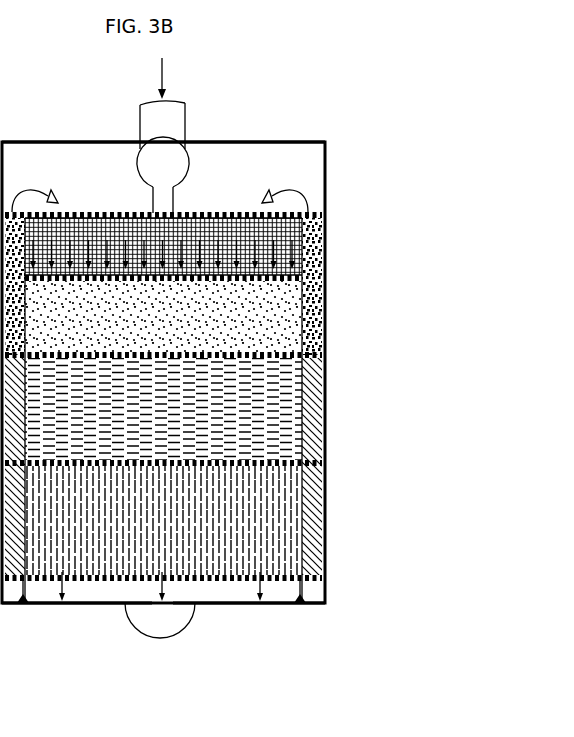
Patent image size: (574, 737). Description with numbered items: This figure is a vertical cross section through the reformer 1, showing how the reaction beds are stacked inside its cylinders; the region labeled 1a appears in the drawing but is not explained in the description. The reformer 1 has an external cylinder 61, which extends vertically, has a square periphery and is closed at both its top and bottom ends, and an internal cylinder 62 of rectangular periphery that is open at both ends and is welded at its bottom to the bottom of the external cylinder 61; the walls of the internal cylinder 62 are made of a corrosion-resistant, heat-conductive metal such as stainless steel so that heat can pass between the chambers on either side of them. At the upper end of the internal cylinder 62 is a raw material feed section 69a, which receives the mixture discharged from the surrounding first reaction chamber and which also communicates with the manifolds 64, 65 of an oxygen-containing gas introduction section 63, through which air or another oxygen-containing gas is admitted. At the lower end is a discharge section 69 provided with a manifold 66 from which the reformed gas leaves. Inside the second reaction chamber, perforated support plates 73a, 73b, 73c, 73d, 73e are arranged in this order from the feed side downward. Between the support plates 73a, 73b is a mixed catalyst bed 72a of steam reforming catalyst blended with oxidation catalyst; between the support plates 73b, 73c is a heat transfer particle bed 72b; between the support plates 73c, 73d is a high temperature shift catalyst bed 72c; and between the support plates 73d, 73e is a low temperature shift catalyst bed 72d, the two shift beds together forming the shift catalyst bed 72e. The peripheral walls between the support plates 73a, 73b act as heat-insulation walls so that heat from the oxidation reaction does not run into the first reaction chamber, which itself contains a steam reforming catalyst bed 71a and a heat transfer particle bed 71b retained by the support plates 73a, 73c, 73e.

The reformer 1 is at (62, 96).
The filter device base 1a is at (12, 637).
The external cylinder 61 is at (38, 141).
The internal cylinder 62 is at (307, 525).
The oxygen-containing gas introduction section 63 is at (188, 120).
The manifold 64 is at (193, 168).
The manifold 65 is at (180, 200).
The manifold 66 is at (102, 597).
The discharge section 69 is at (166, 636).
The raw material feed section 69a is at (137, 190).
The steam reforming catalyst bed 71a is at (310, 310).
The heat transfer particle bed 71b is at (312, 432).
The mixed catalyst bed 72a is at (283, 227).
The heat transfer particle bed 72b is at (270, 328).
The high temperature shift catalyst bed 72c is at (208, 440).
The low temperature shift catalyst bed 72d is at (197, 548).
The shift catalyst bed 72e is at (331, 644).
The support plate 73a is at (315, 185).
The support plate 73b is at (265, 281).
The support plate 73c is at (272, 358).
The support plate 73d is at (275, 470).
The support plate 73e is at (287, 580).